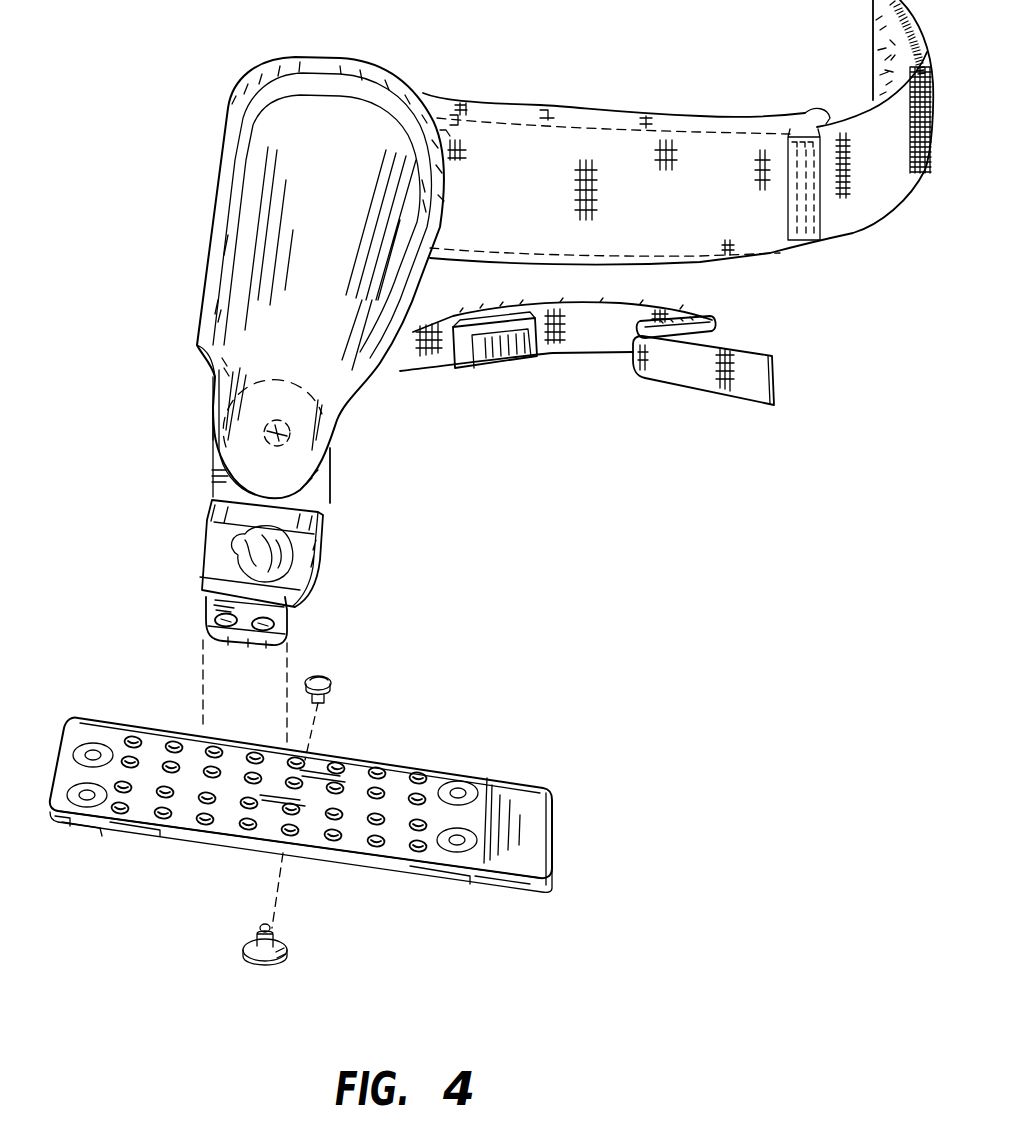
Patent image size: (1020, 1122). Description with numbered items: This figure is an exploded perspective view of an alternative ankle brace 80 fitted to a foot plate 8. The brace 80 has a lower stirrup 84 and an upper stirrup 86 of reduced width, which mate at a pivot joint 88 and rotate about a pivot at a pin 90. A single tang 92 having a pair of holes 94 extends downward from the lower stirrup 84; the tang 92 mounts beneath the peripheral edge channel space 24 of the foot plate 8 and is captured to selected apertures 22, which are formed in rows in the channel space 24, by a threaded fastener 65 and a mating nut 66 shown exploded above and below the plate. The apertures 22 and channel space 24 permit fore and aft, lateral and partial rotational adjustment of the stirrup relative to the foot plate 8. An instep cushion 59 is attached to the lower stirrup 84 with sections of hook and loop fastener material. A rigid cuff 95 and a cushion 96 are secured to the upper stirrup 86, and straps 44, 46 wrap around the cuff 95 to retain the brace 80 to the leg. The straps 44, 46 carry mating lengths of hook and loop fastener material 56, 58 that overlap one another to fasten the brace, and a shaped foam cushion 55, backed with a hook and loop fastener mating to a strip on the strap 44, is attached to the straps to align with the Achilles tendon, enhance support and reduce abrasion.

The foot plate 8 is at (523, 775).
The apertures 22 is at (418, 776).
The peripheral edge channel space 24 is at (195, 835).
The strap 44 is at (625, 115).
The strap 46 is at (645, 308).
The shaped foam cushion 55 is at (505, 368).
The hook and loop fastener material 56 is at (872, 26).
The hook and loop fastener material 58 is at (697, 113).
The instep cushion 59 is at (322, 565).
The threaded fastener 65 is at (332, 683).
The mating nut 66 is at (286, 940).
The brace 80 is at (188, 341).
The lower stirrup 84 is at (348, 486).
The upper stirrup 86 is at (195, 410).
The pivot joint 88 is at (338, 448).
The pin 90 is at (226, 449).
The tang 92 is at (288, 633).
The holes 94 is at (222, 627).
The rigid cuff 95 is at (220, 170).
The cushion 96 is at (268, 152).